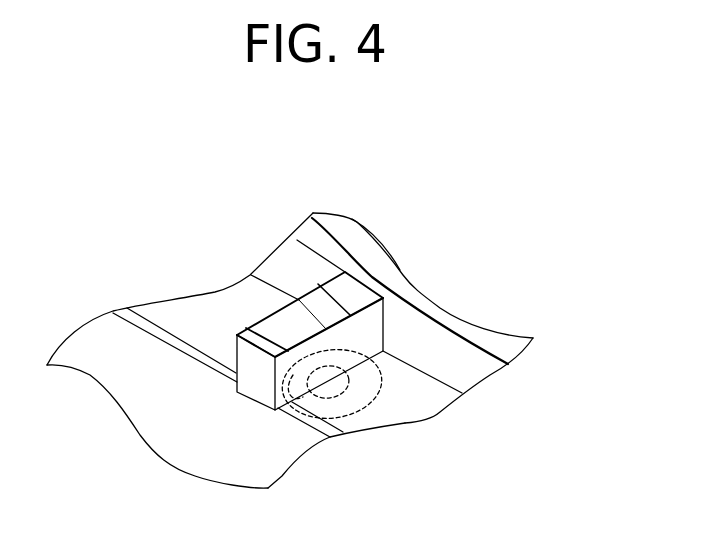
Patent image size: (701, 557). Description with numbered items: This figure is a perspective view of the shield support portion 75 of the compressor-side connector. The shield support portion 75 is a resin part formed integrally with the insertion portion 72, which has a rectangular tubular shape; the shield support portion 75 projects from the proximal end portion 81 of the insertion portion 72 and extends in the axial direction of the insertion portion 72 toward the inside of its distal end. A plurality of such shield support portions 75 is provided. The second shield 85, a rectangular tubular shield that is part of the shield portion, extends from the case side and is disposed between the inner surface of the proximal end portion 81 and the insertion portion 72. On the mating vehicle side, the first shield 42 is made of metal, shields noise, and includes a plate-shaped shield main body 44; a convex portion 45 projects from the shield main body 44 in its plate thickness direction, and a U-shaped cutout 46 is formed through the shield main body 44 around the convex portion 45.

The first shield 42 is at (202, 458).
The shield main body 44 is at (272, 460).
The convex portion 45 is at (287, 412).
The cutout 46 is at (262, 390).
The insertion portion 72 is at (369, 250).
The shield support portion 75 is at (268, 334).
The proximal end portion 81 is at (513, 355).
The second shield 85 is at (436, 401).